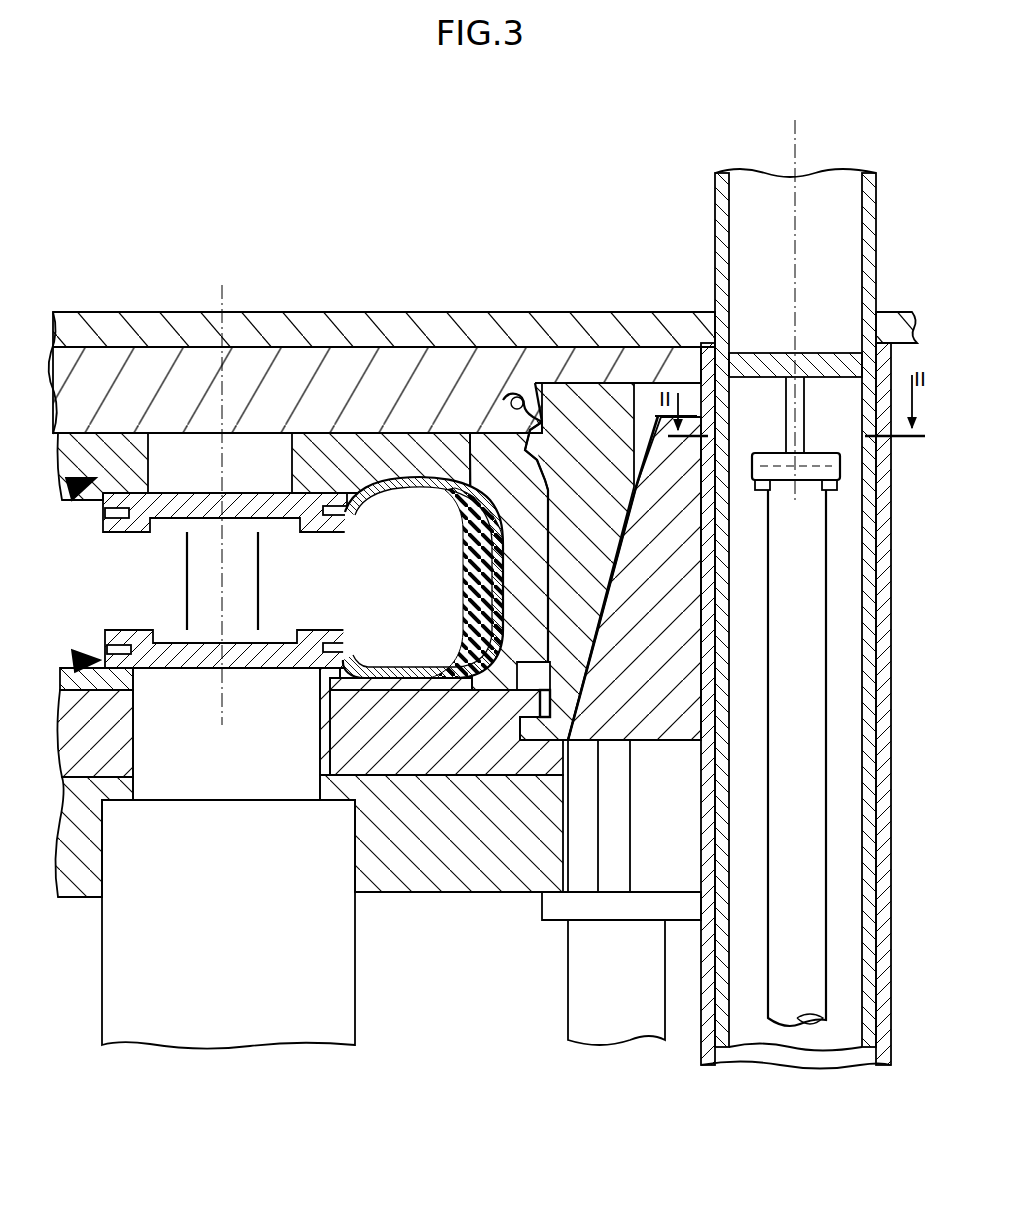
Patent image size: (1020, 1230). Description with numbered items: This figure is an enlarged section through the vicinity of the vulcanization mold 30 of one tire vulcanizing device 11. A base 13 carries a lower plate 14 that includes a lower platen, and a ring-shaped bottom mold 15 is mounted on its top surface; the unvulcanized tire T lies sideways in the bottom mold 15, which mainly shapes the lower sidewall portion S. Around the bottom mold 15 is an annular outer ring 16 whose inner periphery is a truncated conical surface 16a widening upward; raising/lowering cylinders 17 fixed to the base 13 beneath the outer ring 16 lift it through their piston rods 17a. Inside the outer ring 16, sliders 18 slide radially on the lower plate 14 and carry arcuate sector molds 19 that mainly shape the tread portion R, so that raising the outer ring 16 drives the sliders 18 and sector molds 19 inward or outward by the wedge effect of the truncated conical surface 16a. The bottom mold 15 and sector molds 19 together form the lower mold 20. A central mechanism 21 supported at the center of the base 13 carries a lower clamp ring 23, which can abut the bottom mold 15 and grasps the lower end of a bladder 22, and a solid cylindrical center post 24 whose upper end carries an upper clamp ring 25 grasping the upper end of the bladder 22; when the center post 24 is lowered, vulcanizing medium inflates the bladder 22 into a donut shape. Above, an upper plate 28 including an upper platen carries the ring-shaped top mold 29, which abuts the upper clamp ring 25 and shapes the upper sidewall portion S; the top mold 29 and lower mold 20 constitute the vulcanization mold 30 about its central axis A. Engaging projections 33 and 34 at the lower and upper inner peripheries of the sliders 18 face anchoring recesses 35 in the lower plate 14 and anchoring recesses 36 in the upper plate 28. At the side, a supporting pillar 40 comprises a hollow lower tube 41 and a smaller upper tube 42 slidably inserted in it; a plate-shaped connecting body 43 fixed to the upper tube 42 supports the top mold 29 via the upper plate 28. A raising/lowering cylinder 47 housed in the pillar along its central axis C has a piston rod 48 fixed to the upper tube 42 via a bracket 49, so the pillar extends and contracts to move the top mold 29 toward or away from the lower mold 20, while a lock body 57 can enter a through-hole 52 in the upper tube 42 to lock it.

The tire vulcanizing device 11 is at (453, 290).
The base 13 is at (496, 882).
The lower plate 14 is at (340, 715).
The bottom mold 15 is at (325, 672).
The outer ring 16 is at (700, 598).
The truncated conical surface 16a is at (640, 545).
The raising/lowering cylinder 17 is at (580, 962).
The piston rod 17a is at (615, 806).
The slider 18 is at (587, 408).
The sector mold 19 is at (462, 510).
The lower mold 20 is at (428, 702).
The central mechanism 21 is at (360, 970).
The bladder 22 is at (455, 583).
The lower clamp ring 23 is at (332, 632).
The center post 24 is at (259, 605).
The upper clamp ring 25 is at (162, 530).
The upper plate 28 is at (413, 365).
The top mold 29 is at (356, 442).
The vulcanization mold 30 is at (72, 433).
The engaging projection 33 is at (520, 746).
The engaging projection 34 is at (527, 395).
The anchoring recess 35 is at (552, 724).
The anchoring recess 36 is at (511, 412).
The supporting pillar 40 is at (712, 188).
The lower tube 41 is at (890, 488).
The upper tube 42 is at (714, 240).
The connecting body 43 is at (182, 312).
The raising/lowering cylinder 47 is at (810, 1005).
The piston rod 48 is at (786, 415).
The bracket 49 is at (817, 353).
The through-hole 52 is at (815, 458).
The lock body 57 is at (828, 490).
The central axis A is at (222, 285).
The central axis C is at (798, 160).
The sidewall portion S is at (410, 480).
The unvulcanized tire T is at (550, 492).
The tread portion R is at (497, 610).